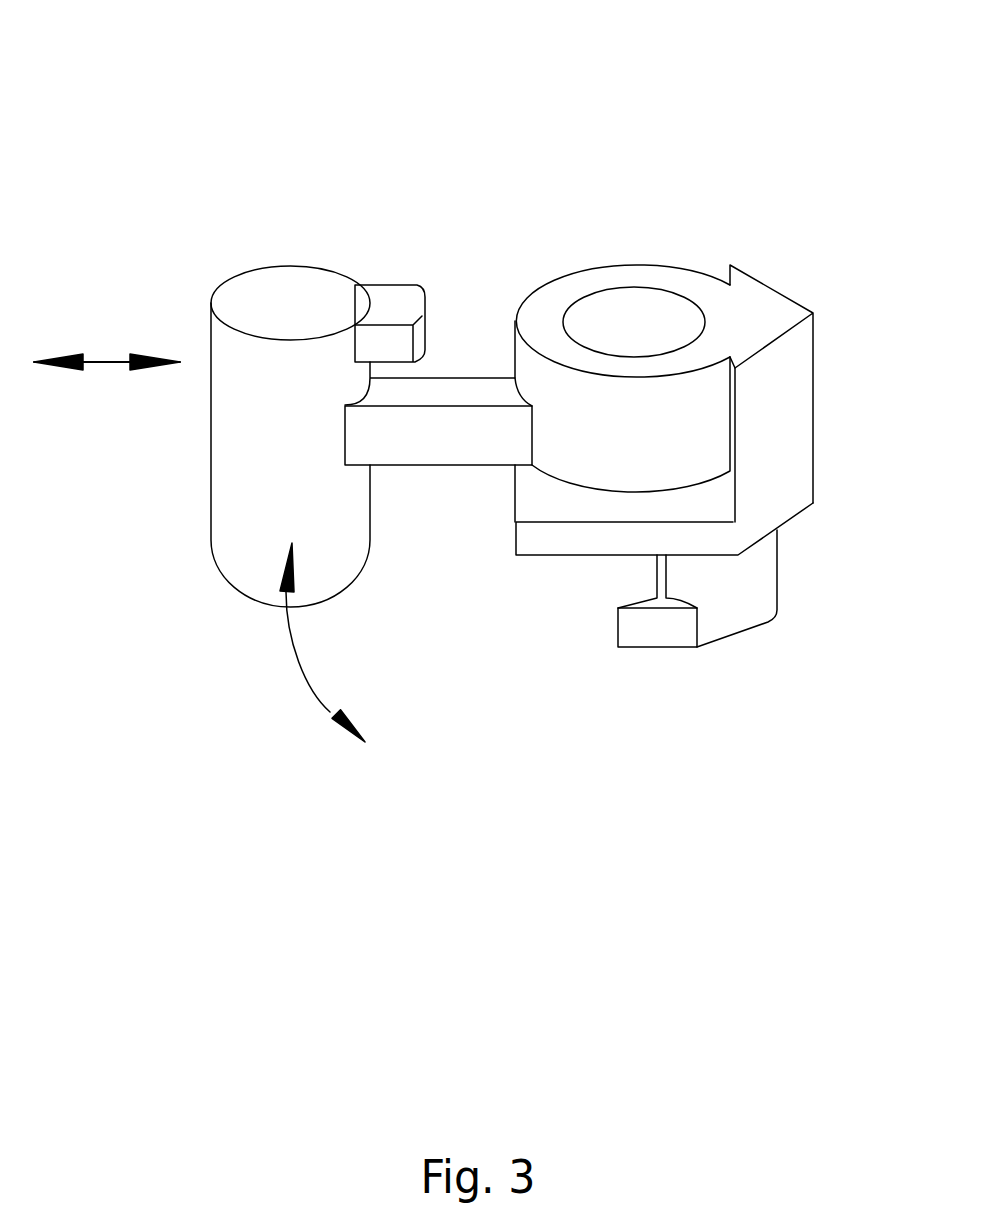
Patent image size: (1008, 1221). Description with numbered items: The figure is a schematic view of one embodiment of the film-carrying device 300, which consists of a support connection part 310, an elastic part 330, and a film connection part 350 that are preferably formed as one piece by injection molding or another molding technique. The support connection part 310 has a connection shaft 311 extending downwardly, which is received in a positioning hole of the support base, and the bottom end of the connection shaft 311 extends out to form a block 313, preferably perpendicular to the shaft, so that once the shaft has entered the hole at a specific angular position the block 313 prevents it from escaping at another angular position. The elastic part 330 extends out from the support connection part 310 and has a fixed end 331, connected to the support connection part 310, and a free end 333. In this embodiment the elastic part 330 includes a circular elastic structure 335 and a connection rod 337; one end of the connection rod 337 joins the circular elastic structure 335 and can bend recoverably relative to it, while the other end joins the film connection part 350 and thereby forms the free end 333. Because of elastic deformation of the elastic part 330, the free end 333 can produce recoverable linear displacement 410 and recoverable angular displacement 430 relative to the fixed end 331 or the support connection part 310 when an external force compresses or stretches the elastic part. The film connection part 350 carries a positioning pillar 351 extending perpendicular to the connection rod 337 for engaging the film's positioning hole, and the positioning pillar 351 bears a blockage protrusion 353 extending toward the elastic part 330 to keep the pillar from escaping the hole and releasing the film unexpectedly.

The film-carrying device 300 is at (171, 47).
The support connection part 310 is at (708, 617).
The connection shaft 311 is at (730, 590).
The block 313 is at (652, 630).
The elastic part 330 is at (579, 396).
The fixed end 331 is at (713, 302).
The free end 333 is at (400, 442).
The circular elastic structure 335 is at (540, 312).
The connection rod 337 is at (472, 428).
The film connection part 350 is at (253, 400).
The positioning pillar 351 is at (298, 366).
The blockage protrusion 353 is at (397, 303).
The linear displacement 410 is at (105, 363).
The angular displacement 430 is at (300, 670).